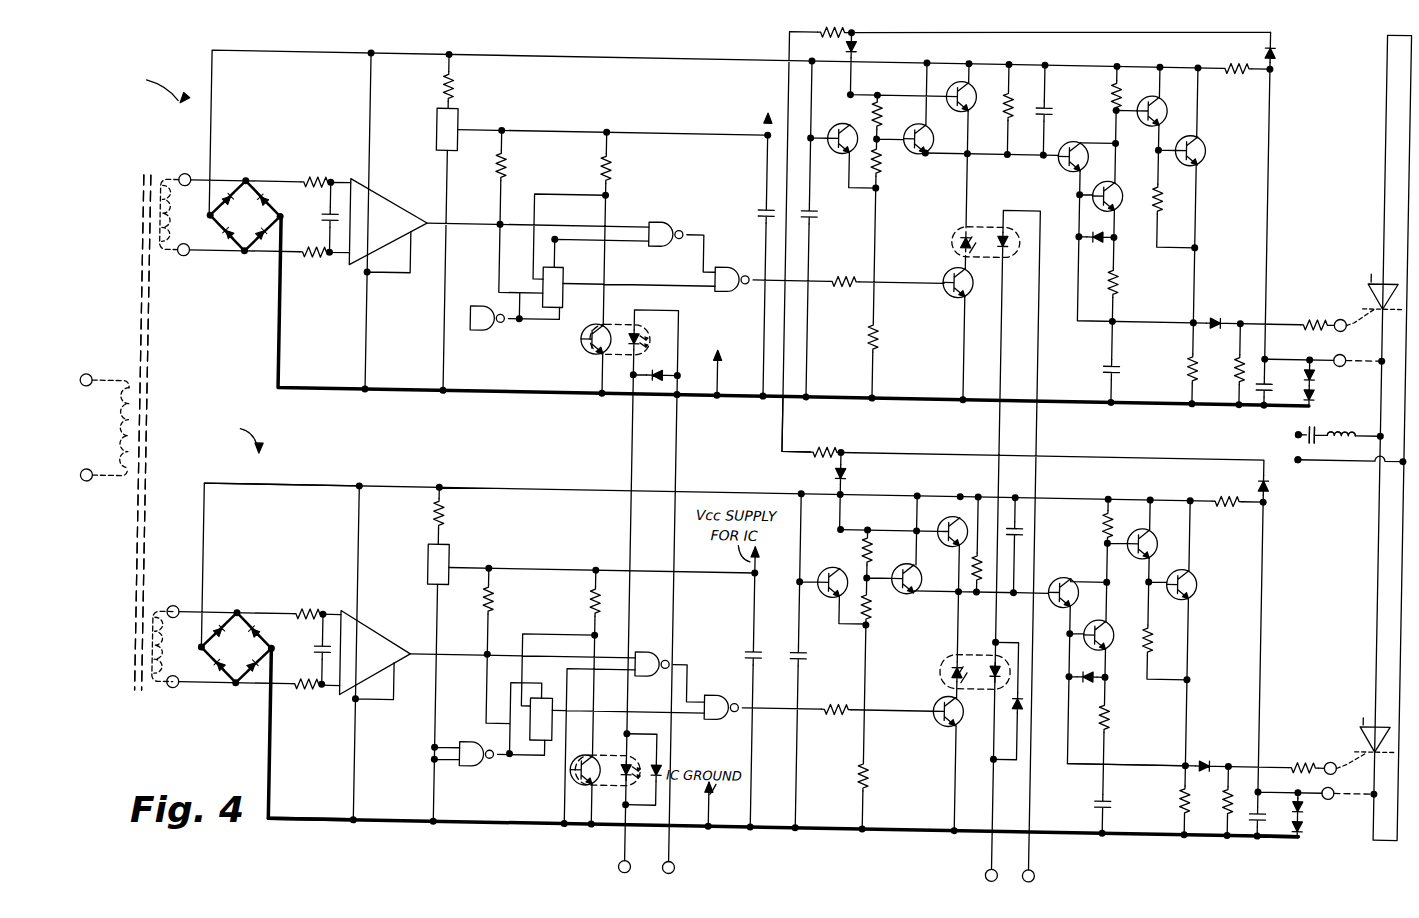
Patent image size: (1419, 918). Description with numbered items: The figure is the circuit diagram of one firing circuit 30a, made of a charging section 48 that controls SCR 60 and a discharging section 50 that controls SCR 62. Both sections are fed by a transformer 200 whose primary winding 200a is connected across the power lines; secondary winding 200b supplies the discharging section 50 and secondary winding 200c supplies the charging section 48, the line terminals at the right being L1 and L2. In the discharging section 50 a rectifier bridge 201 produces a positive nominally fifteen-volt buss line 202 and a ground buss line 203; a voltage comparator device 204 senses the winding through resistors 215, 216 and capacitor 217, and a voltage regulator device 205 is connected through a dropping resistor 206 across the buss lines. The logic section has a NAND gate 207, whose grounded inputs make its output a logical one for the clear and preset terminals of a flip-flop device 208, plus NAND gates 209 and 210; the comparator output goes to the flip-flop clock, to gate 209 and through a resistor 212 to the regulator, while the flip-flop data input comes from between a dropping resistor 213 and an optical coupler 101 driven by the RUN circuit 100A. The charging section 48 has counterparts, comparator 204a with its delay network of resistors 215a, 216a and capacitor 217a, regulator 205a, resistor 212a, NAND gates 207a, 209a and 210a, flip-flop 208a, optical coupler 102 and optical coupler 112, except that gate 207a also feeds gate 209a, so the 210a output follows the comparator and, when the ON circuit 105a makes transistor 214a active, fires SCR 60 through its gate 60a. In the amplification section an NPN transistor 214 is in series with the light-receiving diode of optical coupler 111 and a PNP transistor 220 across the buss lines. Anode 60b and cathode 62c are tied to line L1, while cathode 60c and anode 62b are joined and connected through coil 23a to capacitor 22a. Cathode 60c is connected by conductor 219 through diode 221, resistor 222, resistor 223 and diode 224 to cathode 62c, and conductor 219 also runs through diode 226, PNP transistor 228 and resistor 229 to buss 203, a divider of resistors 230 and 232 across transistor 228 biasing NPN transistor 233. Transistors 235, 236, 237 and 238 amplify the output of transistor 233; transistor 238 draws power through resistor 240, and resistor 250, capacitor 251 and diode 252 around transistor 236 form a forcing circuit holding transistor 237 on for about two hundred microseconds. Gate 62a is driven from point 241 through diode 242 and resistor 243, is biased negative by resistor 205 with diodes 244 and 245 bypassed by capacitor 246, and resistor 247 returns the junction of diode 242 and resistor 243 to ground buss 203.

The firing circuit 30a is at (155, 83).
The secondary winding 200c is at (170, 182).
The charging section 48 is at (260, 288).
The resistor 215a is at (308, 171).
The capacitor 217a is at (320, 224).
The resistor 216a is at (306, 270).
The comparator 204a is at (408, 212).
The potentiometer 205a is at (454, 121).
The resistor 212a is at (500, 169).
The NAND gate 209a is at (648, 228).
The NAND gate 210a is at (710, 270).
The NAND gate 207a is at (474, 338).
The flip-flop 208a is at (560, 315).
The optical coupler 102 is at (612, 326).
The resistor 222 is at (810, 28).
The diode 221 is at (1269, 40).
The optical coupler 112 is at (975, 222).
The transistor 214a is at (942, 288).
The SCR 60 is at (1365, 274).
The triac gate terminal 60a is at (1354, 310).
The anode 60b is at (1368, 270).
The cathode 60c is at (1360, 336).
The capacitor 22a is at (1313, 420).
The coil 23a is at (1328, 432).
The line L1 is at (1289, 464).
The line terminal L2 is at (1288, 436).
The conductor 219 is at (782, 433).
The resistor 223 is at (825, 444).
The diode 226 is at (846, 473).
The diode 224 is at (1270, 485).
The transformer 200 is at (134, 367).
The primary winding 200a is at (99, 428).
The secondary winding 200b is at (154, 702).
The discharging section 50 is at (239, 436).
The positive DC buss line 202 is at (289, 492).
The ground buss line 203 is at (289, 826).
The rectifier bridge 201 is at (255, 666).
The resistor 215 is at (307, 616).
The capacitor 217 is at (322, 654).
The resistor 216 is at (305, 692).
The voltage comparator device 204 is at (400, 639).
The voltage dropping resistor 206 is at (445, 522).
The voltage regulator device 205 is at (451, 554).
The resistor 212 is at (495, 604).
The dropping resistor 213 is at (592, 602).
The NAND gate 209 is at (672, 648).
The NAND gate 210 is at (733, 690).
The NAND gate 207 is at (476, 765).
The flip-flop device 208 is at (550, 744).
The optical coupler 101 is at (620, 752).
The RUN circuit 100A is at (626, 852).
The PNP transistor 228 is at (818, 566).
The resistor 230 is at (874, 554).
The PNP transistor 220 is at (956, 522).
The NPN transistor 233 is at (924, 573).
The resistor 232 is at (874, 602).
The resistor 229 is at (875, 775).
The NPN transistor 214 is at (945, 728).
The optical coupler 111 is at (990, 638).
The ON circuit 105a is at (994, 848).
The transistor 235 is at (1072, 566).
The NPN transistor 236 is at (1112, 625).
The NPN power transistor 237 is at (1158, 534).
The NPN power transistor 238 is at (1196, 577).
The diode 252 is at (1090, 674).
The resistor 250 is at (1114, 709).
The capacitor 251 is at (1112, 798).
The point 241 is at (1184, 752).
The diode 242 is at (1211, 754).
The resistor 243 is at (1298, 754).
The resistor 240 is at (1182, 796).
The resistor 247 is at (1230, 800).
The capacitor 246 is at (1258, 822).
The diode 244 is at (1308, 802).
The diode 245 is at (1296, 828).
The SCR 62 is at (1364, 718).
The gate 62a is at (1354, 750).
The anode 62b is at (1368, 712).
The cathode 62c is at (1340, 782).